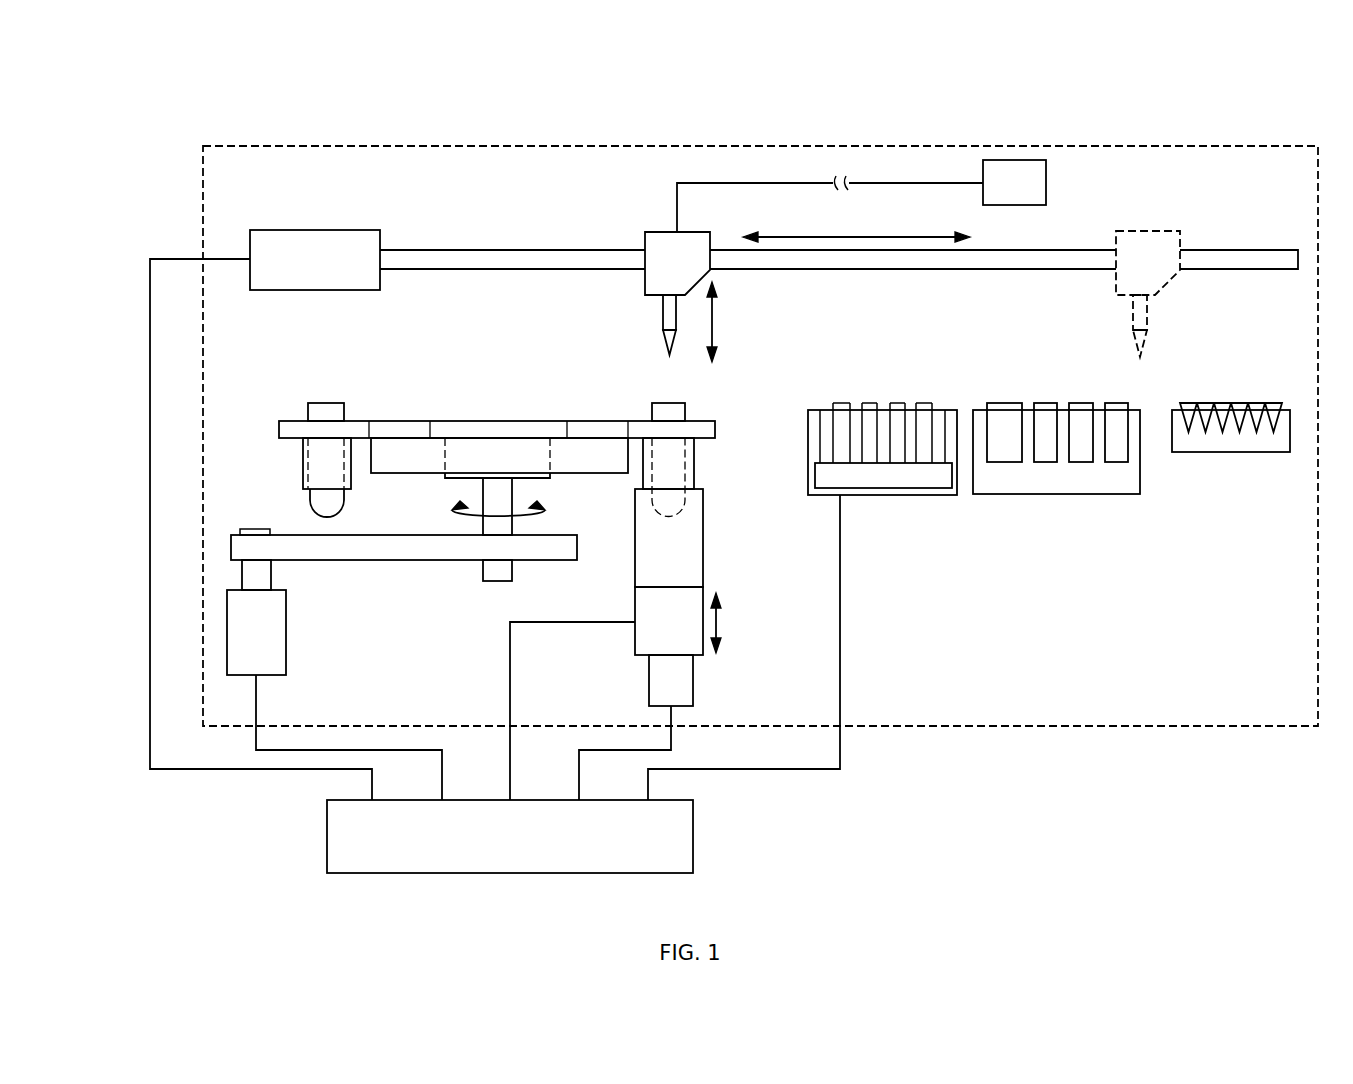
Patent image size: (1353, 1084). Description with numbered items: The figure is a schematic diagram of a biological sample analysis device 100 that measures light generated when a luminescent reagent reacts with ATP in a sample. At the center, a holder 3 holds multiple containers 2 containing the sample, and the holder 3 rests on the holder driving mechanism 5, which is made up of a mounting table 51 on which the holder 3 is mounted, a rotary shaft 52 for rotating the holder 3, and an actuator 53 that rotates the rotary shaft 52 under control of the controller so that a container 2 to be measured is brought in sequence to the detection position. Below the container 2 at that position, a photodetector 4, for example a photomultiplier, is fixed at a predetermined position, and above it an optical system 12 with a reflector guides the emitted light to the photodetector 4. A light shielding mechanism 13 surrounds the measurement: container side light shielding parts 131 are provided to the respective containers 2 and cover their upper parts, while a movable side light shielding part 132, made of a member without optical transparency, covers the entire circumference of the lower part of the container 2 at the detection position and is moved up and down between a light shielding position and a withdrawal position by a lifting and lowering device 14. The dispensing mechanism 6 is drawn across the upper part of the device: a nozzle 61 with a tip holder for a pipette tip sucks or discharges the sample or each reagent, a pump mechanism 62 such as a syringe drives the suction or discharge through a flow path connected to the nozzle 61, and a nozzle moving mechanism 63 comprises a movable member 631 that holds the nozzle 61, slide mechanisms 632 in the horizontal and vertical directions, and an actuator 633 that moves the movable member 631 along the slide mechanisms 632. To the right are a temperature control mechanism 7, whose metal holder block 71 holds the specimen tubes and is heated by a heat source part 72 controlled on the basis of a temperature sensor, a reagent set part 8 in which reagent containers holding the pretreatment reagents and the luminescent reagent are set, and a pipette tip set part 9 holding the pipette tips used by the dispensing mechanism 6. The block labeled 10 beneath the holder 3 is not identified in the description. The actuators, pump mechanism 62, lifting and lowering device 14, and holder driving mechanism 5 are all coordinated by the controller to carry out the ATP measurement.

The biological sample analysis device 100 is at (268, 118).
The dispensing mechanism 6 is at (640, 152).
The nozzle moving mechanism 63 is at (441, 228).
The actuator 633 is at (323, 230).
The slide mechanisms 632 is at (511, 250).
The movable member 631 is at (645, 240).
The pump mechanism 62 is at (1046, 183).
The nozzle 61 is at (663, 312).
The container 2 is at (323, 403).
The holder 3 is at (489, 421).
The container side light shielding part 131 is at (303, 463).
The container block 10 is at (601, 473).
The mounting table 51 is at (450, 483).
The holder driving mechanism 5 is at (377, 605).
The rotary shaft 52 is at (483, 568).
The actuator 53 is at (318, 574).
The light shielding mechanism 13 is at (718, 499).
The movable side light shielding part 132 is at (705, 552).
The optical system 12 is at (722, 576).
The lifting and lowering device 14 is at (695, 668).
The photodetector 4 is at (635, 643).
The temperature control mechanism 7 is at (890, 474).
The holder block 71 is at (867, 500).
The heat source part 72 is at (936, 500).
The reagent set part 8 is at (1057, 495).
The pipette tip set part 9 is at (1229, 452).